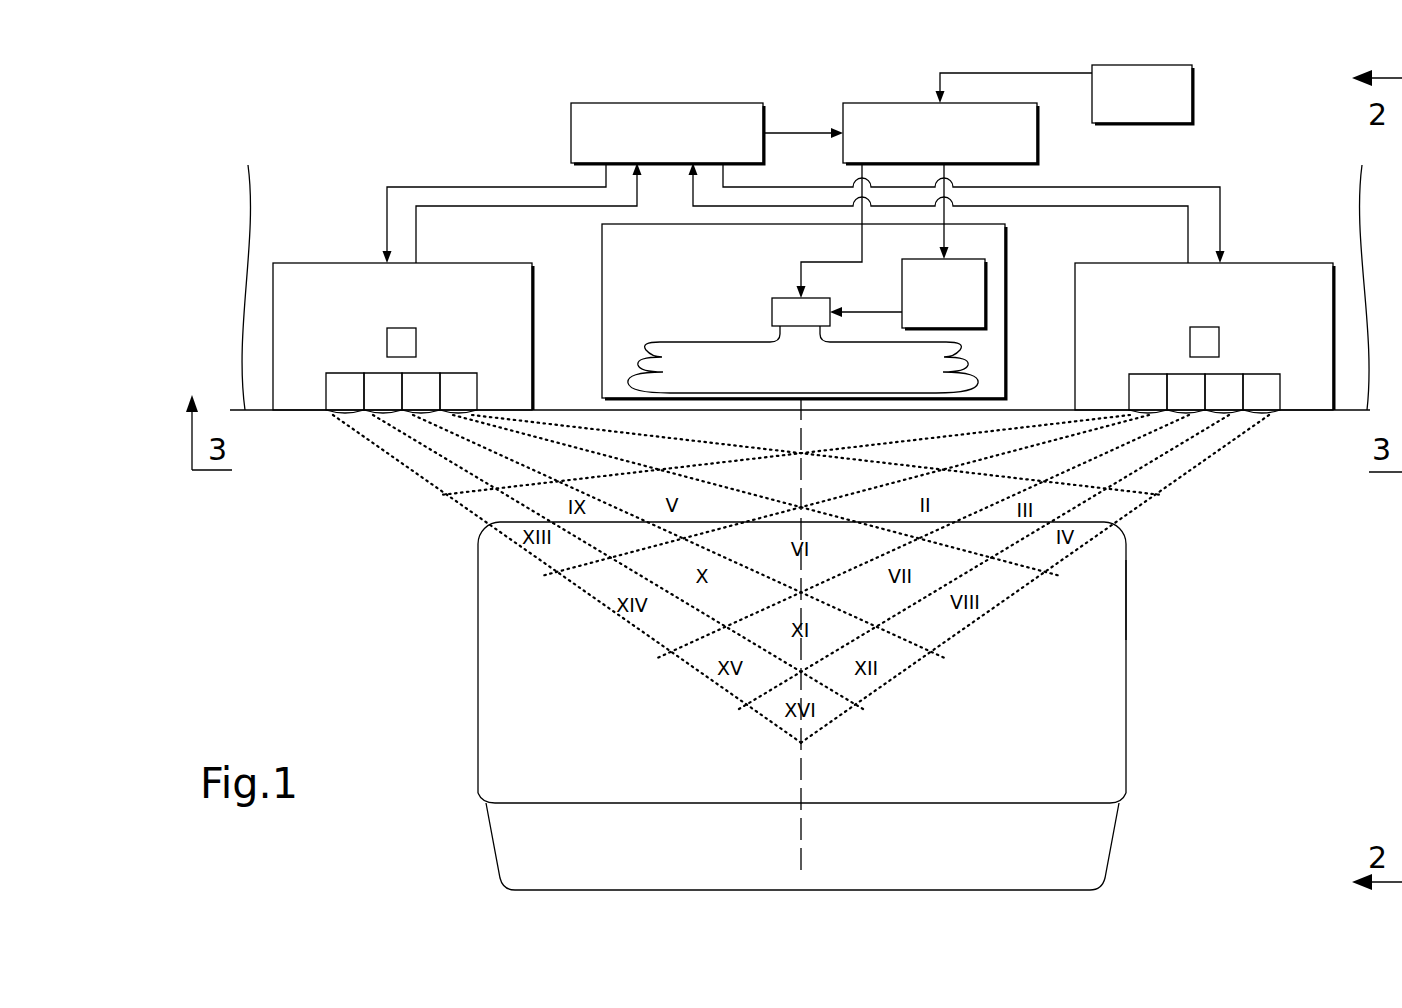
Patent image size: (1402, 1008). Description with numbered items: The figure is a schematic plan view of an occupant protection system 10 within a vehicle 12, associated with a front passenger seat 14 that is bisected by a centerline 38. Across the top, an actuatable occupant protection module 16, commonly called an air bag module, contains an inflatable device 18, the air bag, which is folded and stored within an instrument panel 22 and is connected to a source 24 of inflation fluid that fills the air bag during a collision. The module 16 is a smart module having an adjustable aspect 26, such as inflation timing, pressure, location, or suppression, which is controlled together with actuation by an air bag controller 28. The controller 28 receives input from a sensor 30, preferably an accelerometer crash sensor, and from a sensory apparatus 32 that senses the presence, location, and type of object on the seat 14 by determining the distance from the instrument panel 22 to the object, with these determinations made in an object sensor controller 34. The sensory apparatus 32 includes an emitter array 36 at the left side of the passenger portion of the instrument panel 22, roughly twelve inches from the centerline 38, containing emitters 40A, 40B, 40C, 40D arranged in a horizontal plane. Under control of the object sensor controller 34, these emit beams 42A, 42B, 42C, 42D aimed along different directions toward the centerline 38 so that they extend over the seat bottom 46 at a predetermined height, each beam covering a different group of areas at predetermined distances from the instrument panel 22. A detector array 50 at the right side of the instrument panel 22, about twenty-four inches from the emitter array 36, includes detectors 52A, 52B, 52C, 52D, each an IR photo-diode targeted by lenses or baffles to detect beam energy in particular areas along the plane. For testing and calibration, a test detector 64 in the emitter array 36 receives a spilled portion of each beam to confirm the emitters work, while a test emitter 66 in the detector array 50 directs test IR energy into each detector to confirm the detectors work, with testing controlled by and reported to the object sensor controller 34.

The occupant protection system 10 is at (308, 92).
The vehicle 12 is at (302, 203).
The front passenger seat 14 is at (1142, 689).
The actuatable occupant protection module 16 is at (602, 266).
The inflatable device 18 is at (700, 348).
The instrument panel 22 is at (1312, 406).
The source of inflation fluid 24 is at (775, 309).
The adjustable aspect 26 is at (960, 262).
The air bag controller 28 is at (1037, 142).
The sensor 30 is at (1192, 78).
The sensory apparatus 32 is at (338, 538).
The object sensor controller 34 is at (571, 142).
The emitter array 36 is at (283, 264).
The centerline 38 is at (801, 826).
The emitter 40A is at (468, 387).
The emitter 40B is at (423, 378).
The emitter 40C is at (384, 378).
The emitter 40D is at (336, 388).
The first beam 42A is at (620, 442).
The second beam 42B is at (473, 432).
The third beam 42C is at (463, 455).
The fourth beam 42D is at (450, 479).
The seat bottom 46 is at (1110, 598).
The detector array 50 is at (1086, 264).
The detector 52A is at (1138, 388).
The detector 52B is at (1185, 378).
The detector 52C is at (1224, 378).
The detector 52D is at (1265, 388).
The test detector 64 is at (388, 336).
The test emitter 66 is at (1191, 336).